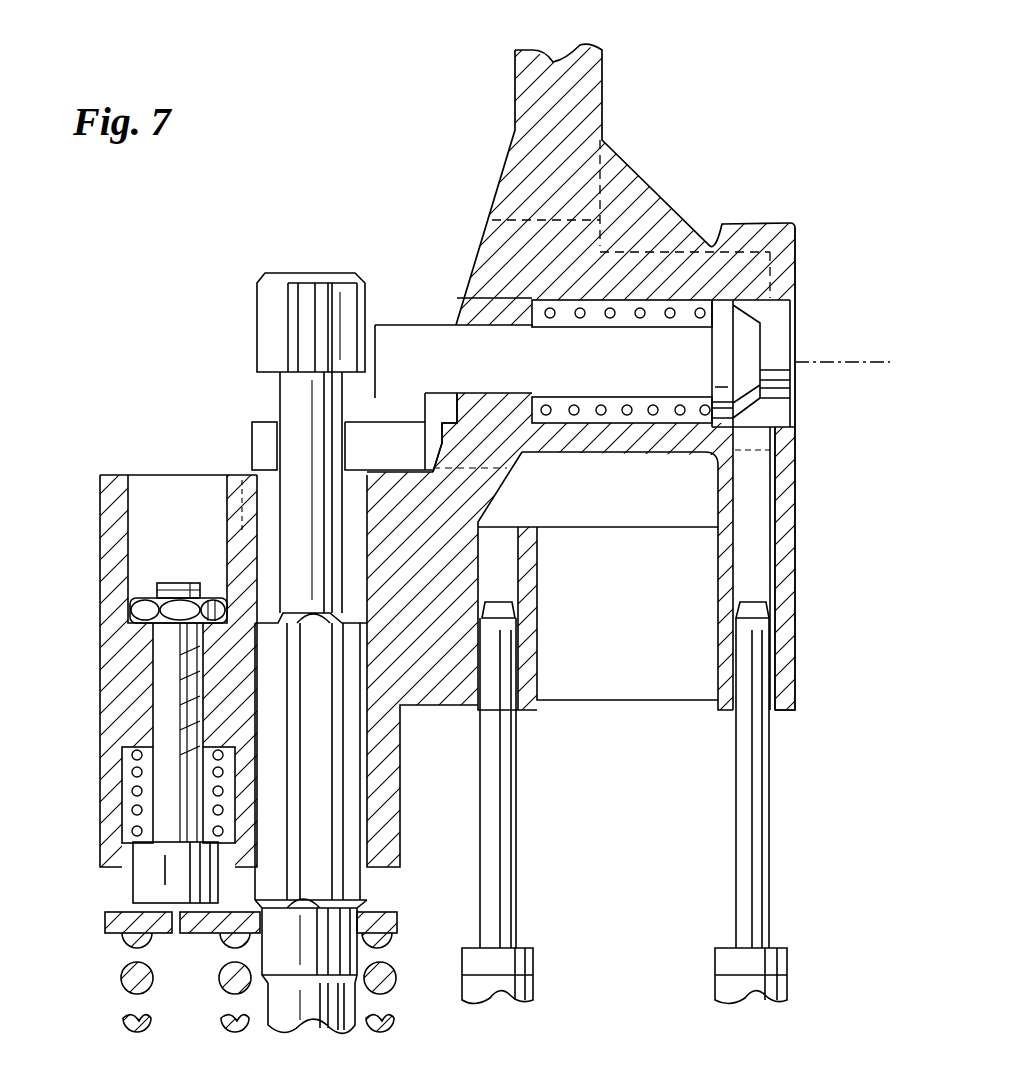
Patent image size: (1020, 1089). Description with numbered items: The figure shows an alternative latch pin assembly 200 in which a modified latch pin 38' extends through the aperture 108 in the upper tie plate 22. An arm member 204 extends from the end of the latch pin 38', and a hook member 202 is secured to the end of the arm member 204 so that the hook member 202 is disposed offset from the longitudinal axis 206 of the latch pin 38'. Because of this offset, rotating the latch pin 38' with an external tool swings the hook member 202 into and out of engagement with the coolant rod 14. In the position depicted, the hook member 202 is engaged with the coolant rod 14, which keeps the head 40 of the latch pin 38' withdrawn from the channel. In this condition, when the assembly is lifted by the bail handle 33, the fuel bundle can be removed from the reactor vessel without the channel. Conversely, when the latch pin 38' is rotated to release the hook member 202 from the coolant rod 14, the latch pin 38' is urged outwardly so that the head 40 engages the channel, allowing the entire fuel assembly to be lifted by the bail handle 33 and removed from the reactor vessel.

The coolant rod 14 is at (290, 522).
The upper tie plate 22 is at (783, 238).
The bail handle 33 is at (582, 53).
The latch pin 38' is at (398, 313).
The head 40 is at (781, 340).
The aperture 108 is at (455, 323).
The latch pin assembly 200 is at (758, 125).
The hook member 202 is at (252, 448).
The arm member 204 is at (383, 398).
The longitudinal axis 206 is at (833, 362).